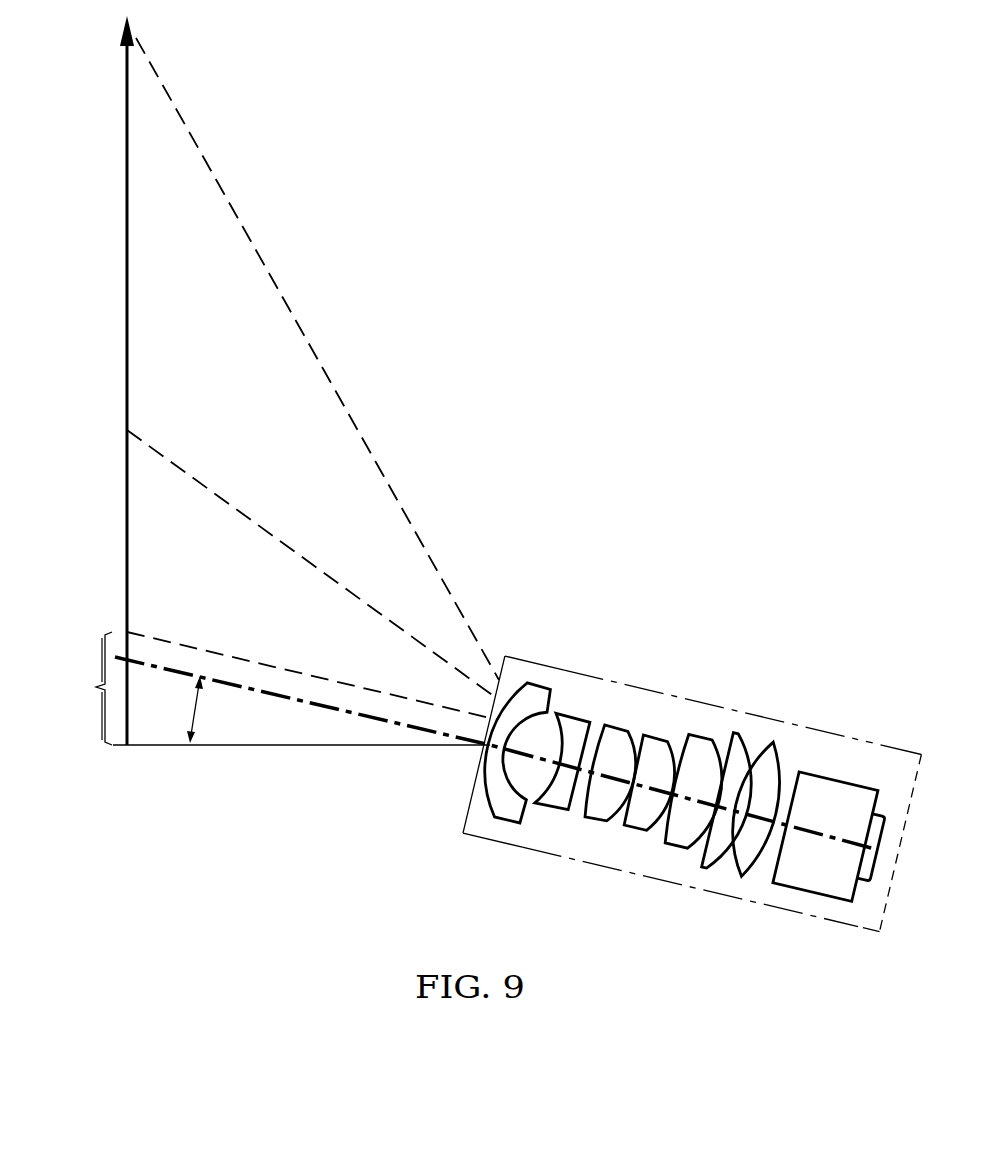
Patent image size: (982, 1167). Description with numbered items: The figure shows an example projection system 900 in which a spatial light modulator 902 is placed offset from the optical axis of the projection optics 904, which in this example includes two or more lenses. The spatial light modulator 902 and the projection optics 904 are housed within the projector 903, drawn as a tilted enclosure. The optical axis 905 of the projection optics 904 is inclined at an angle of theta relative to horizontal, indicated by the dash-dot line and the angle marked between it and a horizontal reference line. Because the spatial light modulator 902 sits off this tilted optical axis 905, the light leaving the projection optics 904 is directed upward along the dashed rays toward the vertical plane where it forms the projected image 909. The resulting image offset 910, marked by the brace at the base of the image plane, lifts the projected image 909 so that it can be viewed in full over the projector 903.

The projection system 900 is at (641, 289).
The spatial light modulator 902 is at (825, 858).
The projector 903 is at (692, 794).
The projection optics 904 is at (627, 798).
The optical axis 905 is at (302, 747).
The projected image 909 is at (126, 279).
The image offset 910 is at (104, 696).